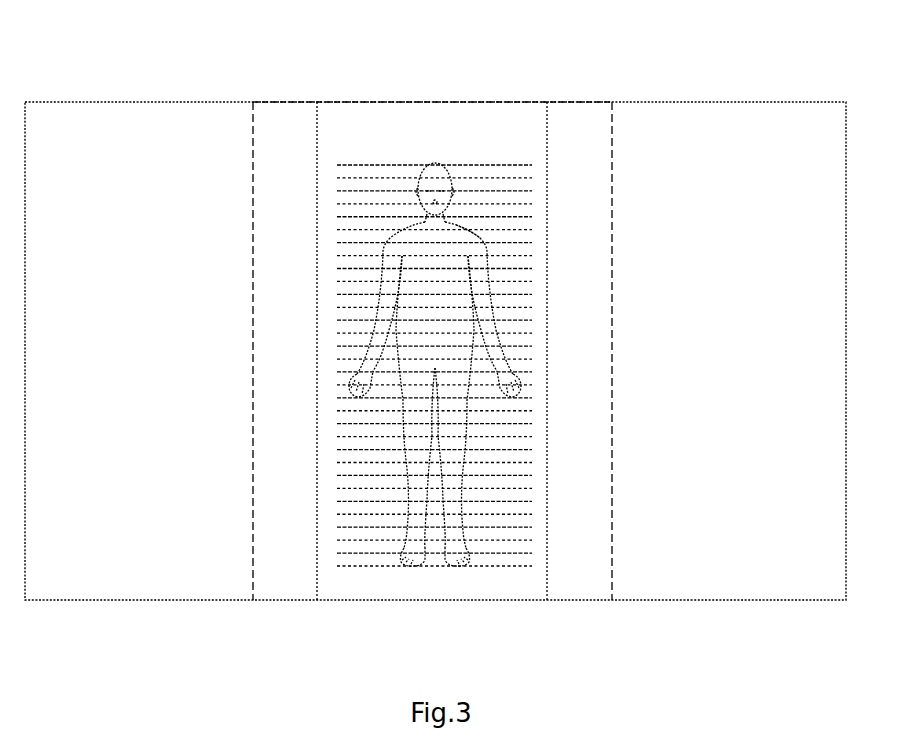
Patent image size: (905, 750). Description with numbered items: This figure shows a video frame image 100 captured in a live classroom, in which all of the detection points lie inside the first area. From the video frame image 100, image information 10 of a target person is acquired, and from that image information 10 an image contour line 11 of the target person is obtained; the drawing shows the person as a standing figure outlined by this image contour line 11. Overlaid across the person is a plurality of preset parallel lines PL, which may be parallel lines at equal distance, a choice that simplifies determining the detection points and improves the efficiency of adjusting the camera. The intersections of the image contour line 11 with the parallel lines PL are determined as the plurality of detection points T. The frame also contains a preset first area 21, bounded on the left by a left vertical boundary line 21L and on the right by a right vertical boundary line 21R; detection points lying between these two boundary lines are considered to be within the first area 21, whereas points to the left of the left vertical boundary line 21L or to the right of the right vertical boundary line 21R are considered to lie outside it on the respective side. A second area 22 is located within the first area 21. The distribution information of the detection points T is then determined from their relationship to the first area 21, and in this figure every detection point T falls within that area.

The video frame image 100 is at (133, 100).
The left vertical boundary line 21L is at (252, 143).
The right vertical boundary line 21R is at (612, 171).
The first area 21 is at (290, 130).
The second area 22 is at (535, 152).
The preset parallel lines PL is at (362, 163).
The image information 10 is at (428, 290).
The image contour line 11 is at (415, 222).
The detection points T is at (467, 230).